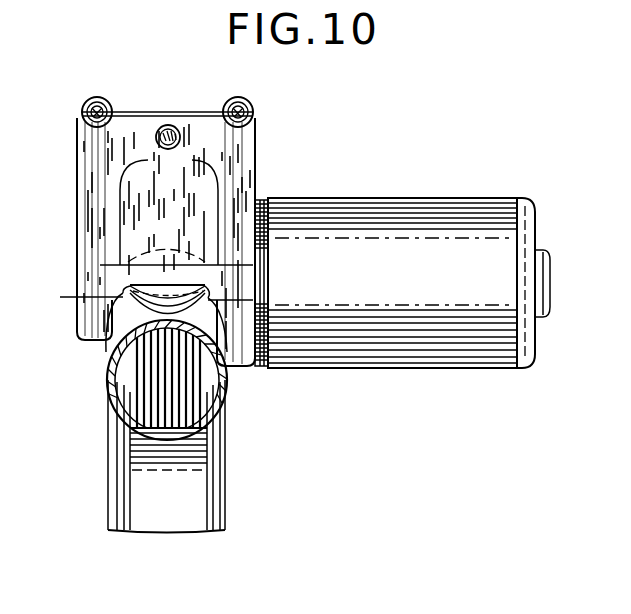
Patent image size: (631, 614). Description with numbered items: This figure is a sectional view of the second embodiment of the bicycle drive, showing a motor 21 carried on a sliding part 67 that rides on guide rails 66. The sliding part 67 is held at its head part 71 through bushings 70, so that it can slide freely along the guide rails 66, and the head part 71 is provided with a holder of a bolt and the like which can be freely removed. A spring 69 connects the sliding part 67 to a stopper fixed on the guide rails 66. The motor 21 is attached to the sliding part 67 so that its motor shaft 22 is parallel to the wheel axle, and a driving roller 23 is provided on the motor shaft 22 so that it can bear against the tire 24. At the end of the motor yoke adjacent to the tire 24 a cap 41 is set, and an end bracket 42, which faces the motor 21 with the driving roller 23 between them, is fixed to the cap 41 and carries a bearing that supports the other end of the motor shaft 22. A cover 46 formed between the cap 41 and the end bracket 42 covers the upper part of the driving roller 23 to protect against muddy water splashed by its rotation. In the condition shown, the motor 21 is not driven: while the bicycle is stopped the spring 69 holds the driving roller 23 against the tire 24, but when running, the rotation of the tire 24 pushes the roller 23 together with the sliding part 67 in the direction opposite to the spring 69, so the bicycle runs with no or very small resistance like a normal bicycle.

The motor 21 is at (350, 197).
The motor shaft 22 is at (100, 255).
The driving roller 23 is at (117, 343).
The tire 24 is at (221, 367).
The cap 41 is at (245, 200).
The end bracket 42 is at (77, 310).
The cover 46 is at (150, 202).
The guide rails 66 is at (82, 113).
The sliding part 67 is at (100, 163).
The spring 69 is at (253, 113).
The bushings 70 is at (97, 97).
The head part 71 is at (156, 112).